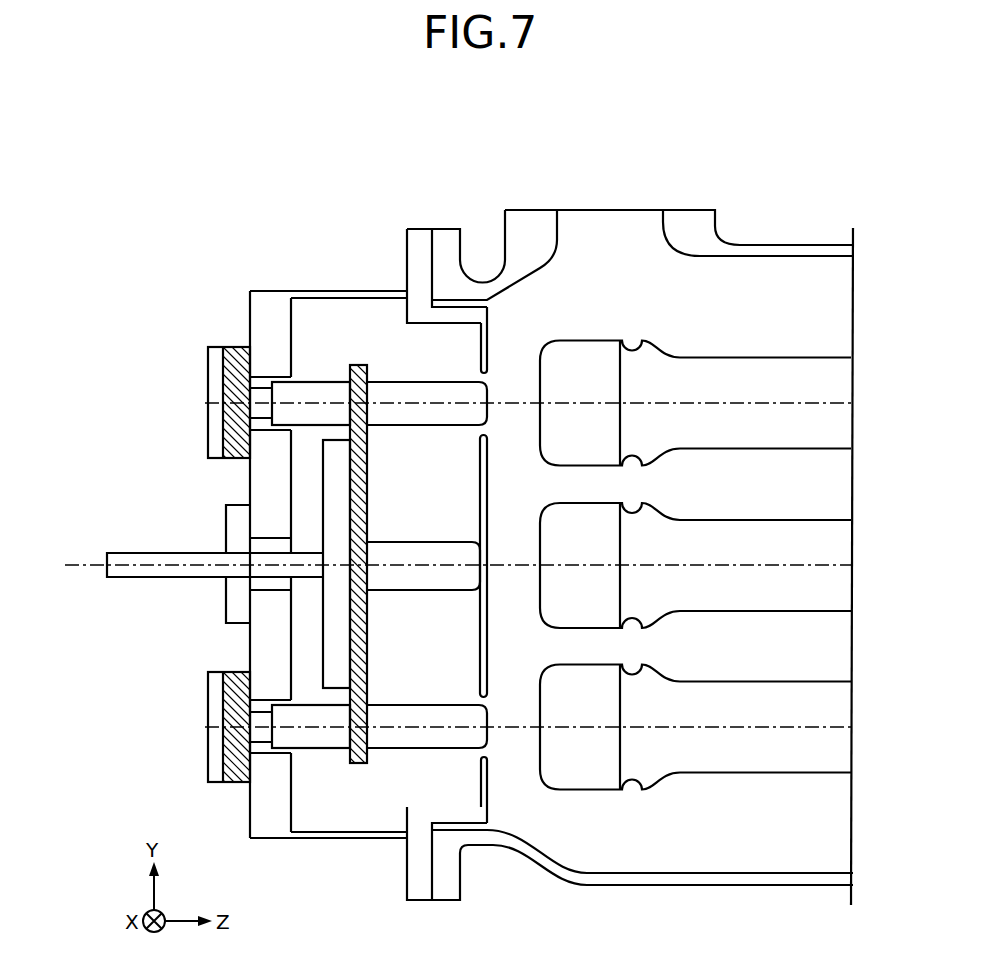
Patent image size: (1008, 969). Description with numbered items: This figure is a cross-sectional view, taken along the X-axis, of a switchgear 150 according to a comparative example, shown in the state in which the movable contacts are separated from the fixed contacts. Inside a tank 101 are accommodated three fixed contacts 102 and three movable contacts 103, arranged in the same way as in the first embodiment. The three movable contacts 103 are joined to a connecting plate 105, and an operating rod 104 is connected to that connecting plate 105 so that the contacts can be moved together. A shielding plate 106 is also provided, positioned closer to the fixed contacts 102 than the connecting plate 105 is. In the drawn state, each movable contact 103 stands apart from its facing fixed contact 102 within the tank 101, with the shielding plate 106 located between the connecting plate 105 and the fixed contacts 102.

The tank 101 is at (445, 237).
The fixed contact 102 is at (588, 341).
The movable contact 103 is at (405, 382).
The operating rod 104 is at (157, 553).
The connecting plate 105 is at (368, 660).
The shielding plate 106 is at (478, 458).
The switchgear 150 is at (692, 176).